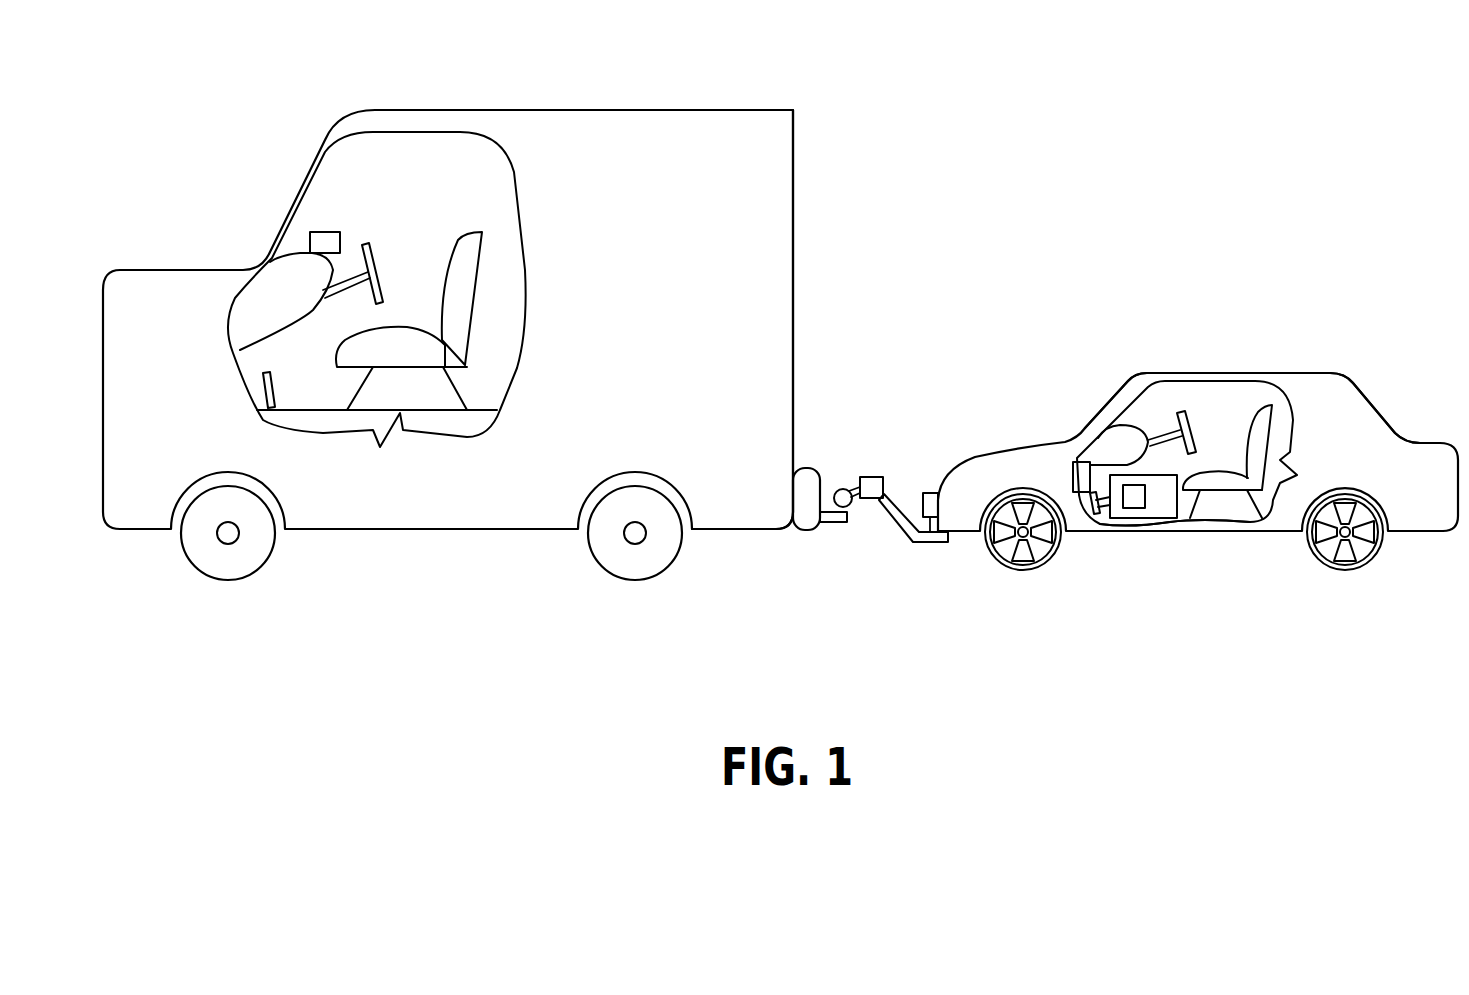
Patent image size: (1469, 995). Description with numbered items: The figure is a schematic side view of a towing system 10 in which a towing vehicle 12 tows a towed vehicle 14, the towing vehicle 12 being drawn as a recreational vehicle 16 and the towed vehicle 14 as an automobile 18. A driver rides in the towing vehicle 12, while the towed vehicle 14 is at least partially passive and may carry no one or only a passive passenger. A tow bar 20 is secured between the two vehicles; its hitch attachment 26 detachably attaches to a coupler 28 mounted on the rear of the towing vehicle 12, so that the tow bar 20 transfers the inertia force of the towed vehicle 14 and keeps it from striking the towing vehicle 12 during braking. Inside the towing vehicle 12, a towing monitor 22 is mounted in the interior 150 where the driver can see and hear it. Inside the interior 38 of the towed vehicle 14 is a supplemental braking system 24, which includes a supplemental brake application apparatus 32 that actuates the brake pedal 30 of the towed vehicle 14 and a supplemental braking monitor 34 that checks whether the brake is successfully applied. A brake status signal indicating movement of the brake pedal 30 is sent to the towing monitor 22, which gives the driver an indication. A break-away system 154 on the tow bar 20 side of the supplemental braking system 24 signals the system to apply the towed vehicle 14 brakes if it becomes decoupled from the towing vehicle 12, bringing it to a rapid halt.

The towing system 10 is at (1030, 243).
The towing vehicle 12 is at (262, 139).
The towed vehicle 14 is at (1042, 400).
The recreational vehicle 16 is at (642, 110).
The automobile 18 is at (1278, 372).
The tow bar 20 is at (925, 545).
The towing monitor 22 is at (330, 230).
The supplemental braking system 24 is at (1153, 551).
The hitch attachment 26 is at (832, 530).
The coupler 28 is at (847, 485).
The brake pedal 30 is at (1088, 515).
The supplemental brake application apparatus 32 is at (1162, 508).
The supplemental braking monitor 34 is at (1082, 480).
The interior 38 is at (1210, 407).
The interior 150 is at (500, 355).
The break-away system 154 is at (930, 492).